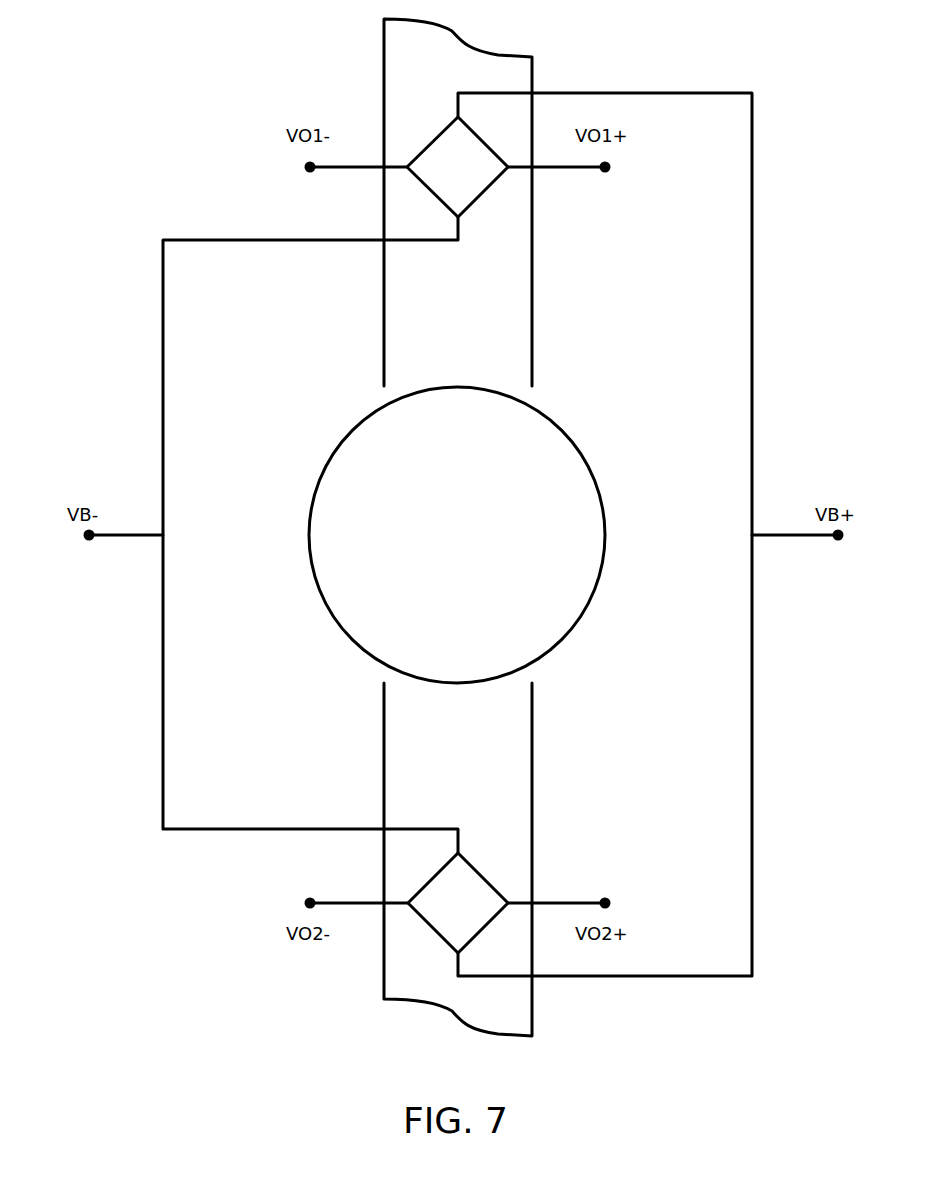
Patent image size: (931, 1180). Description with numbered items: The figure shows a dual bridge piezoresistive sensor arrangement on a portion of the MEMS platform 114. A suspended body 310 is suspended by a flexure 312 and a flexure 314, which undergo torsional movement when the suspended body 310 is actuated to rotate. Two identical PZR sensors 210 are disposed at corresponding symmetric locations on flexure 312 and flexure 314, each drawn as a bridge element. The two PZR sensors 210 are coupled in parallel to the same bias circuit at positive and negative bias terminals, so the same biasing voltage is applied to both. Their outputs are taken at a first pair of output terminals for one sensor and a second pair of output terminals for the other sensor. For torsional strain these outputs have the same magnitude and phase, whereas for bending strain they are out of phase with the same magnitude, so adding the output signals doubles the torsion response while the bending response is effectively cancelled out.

The MEMS platform 114 is at (222, 152).
The piezoresistive (PZR) sensor 210 is at (479, 198).
The suspended body 310 is at (566, 430).
The flexure 312 is at (532, 325).
The flexure 314 is at (532, 768).